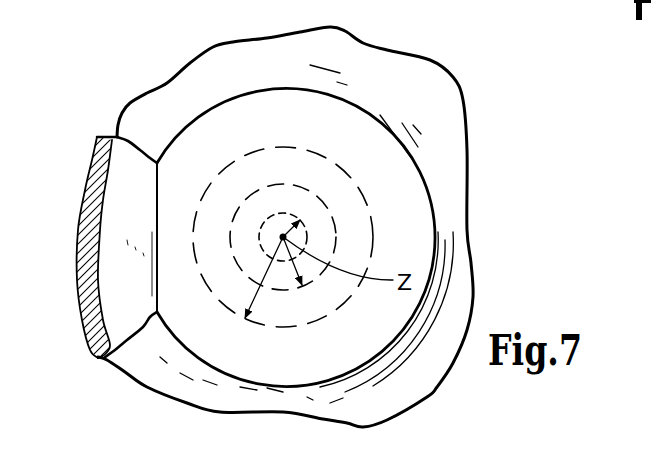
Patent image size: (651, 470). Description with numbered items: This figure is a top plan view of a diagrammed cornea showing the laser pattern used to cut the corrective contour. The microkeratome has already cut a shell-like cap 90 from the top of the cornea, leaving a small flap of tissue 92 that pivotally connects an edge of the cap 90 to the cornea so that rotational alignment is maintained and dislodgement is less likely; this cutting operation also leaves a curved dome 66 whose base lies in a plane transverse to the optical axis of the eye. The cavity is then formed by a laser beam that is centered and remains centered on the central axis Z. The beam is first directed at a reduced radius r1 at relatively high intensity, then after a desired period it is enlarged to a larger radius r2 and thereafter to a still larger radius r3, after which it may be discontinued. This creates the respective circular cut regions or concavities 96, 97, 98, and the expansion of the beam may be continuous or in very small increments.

The curved dome 66 is at (323, 135).
The cap 90 is at (117, 320).
The flap of tissue 92 is at (137, 208).
The circular cut region 96 is at (277, 210).
The circular cut region 97 is at (290, 182).
The circular cut region 98 is at (367, 197).